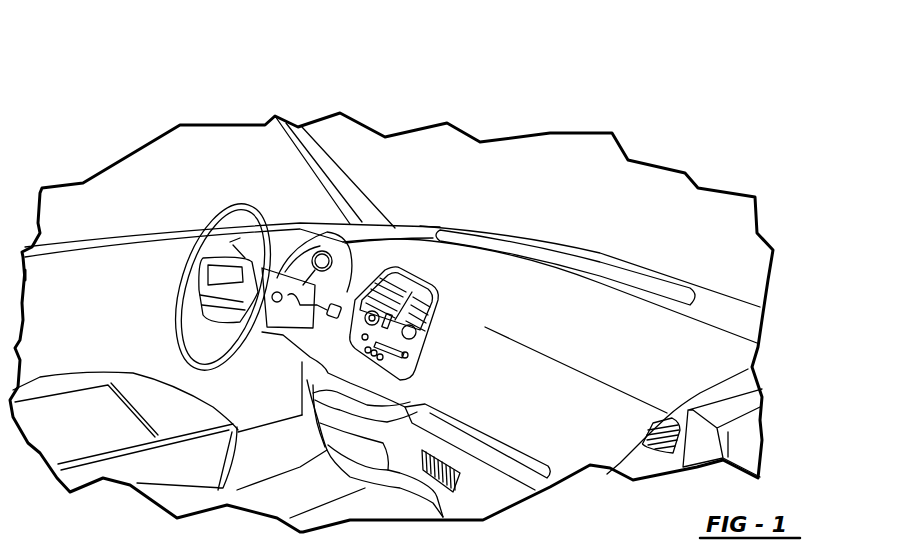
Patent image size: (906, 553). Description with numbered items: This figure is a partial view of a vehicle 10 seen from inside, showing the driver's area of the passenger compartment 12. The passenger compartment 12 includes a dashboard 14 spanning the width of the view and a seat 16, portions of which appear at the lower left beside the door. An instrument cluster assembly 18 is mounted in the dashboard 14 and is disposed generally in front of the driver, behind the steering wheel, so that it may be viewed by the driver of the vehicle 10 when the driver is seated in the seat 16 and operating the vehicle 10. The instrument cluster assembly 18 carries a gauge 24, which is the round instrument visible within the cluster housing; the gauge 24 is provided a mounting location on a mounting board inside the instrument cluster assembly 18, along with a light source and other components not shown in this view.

The vehicle 10 is at (706, 80).
The passenger compartment 12 is at (160, 203).
The dashboard 14 is at (568, 312).
The seat 16 is at (92, 431).
The instrument cluster assembly 18 is at (322, 216).
The gauge 24 is at (318, 258).